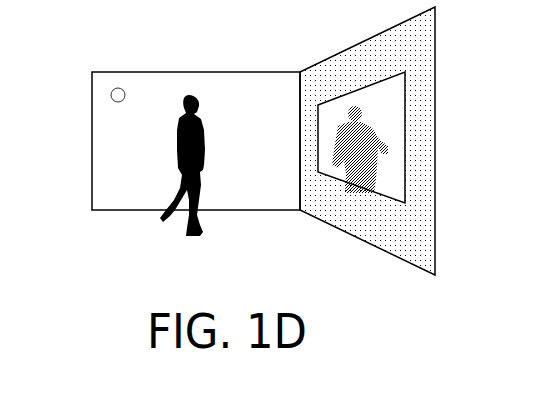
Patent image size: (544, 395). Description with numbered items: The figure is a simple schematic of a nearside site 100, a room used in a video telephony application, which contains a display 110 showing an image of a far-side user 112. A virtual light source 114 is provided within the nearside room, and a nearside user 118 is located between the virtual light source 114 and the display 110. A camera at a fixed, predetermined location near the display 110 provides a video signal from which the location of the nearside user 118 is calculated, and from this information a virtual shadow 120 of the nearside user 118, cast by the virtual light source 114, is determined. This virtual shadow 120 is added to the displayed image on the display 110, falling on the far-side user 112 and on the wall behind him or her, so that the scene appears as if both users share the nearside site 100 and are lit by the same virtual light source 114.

The nearside site 100 is at (272, 162).
The display 110 is at (397, 97).
The far-side user 112 is at (347, 170).
The virtual light source 114 is at (117, 92).
The nearside user 118 is at (188, 238).
The virtual shadow of the nearside user 120 is at (370, 173).